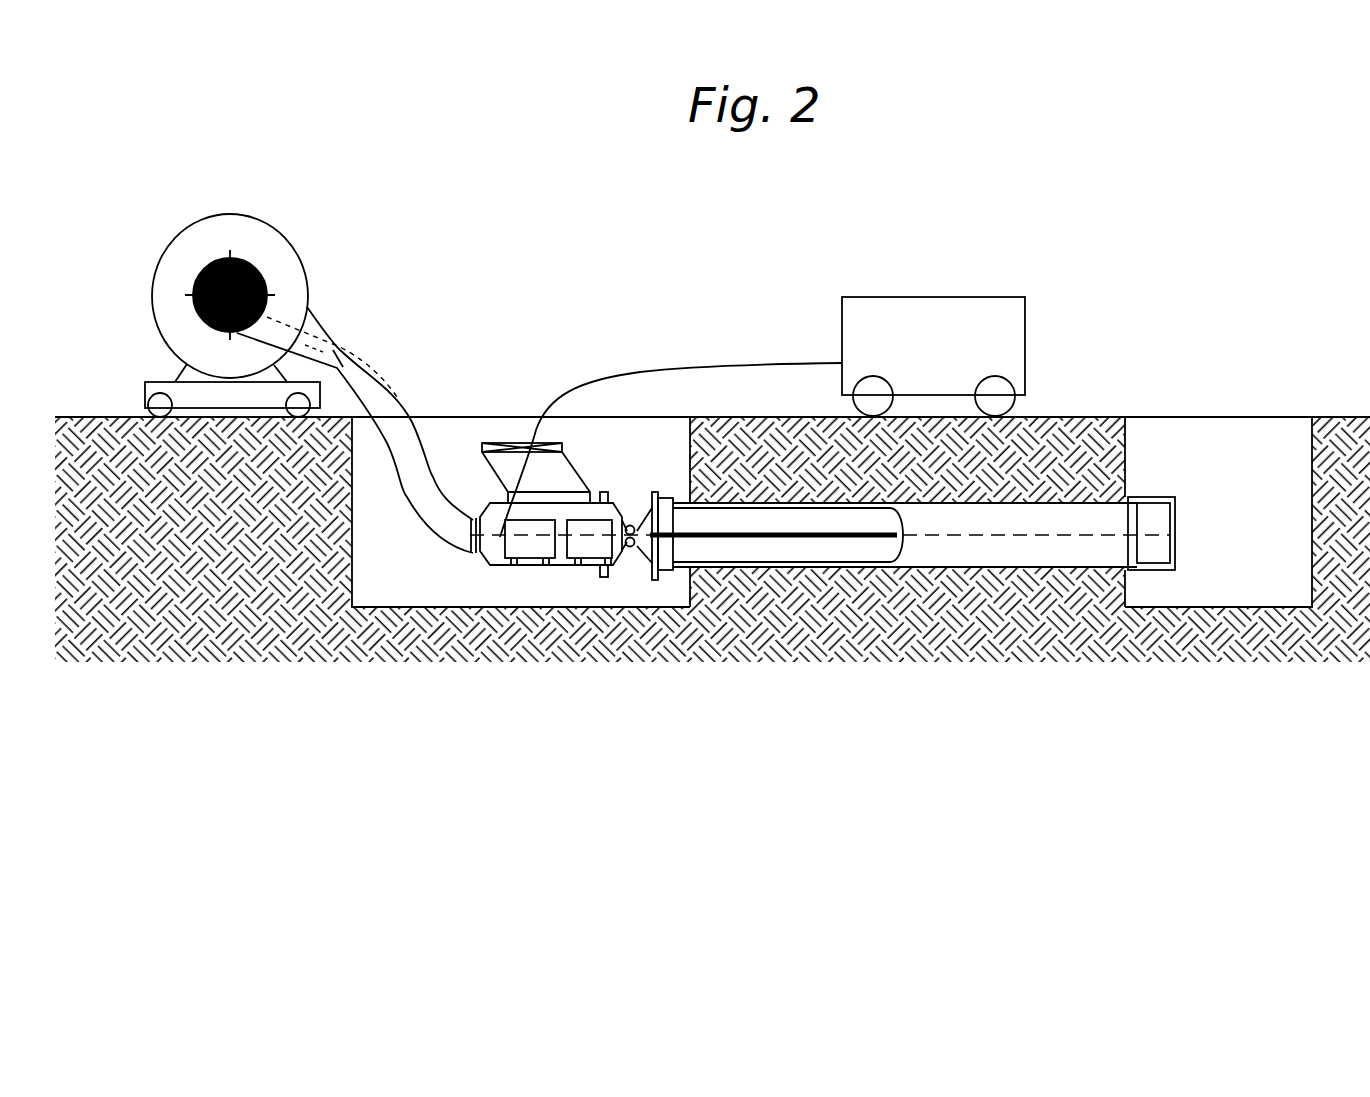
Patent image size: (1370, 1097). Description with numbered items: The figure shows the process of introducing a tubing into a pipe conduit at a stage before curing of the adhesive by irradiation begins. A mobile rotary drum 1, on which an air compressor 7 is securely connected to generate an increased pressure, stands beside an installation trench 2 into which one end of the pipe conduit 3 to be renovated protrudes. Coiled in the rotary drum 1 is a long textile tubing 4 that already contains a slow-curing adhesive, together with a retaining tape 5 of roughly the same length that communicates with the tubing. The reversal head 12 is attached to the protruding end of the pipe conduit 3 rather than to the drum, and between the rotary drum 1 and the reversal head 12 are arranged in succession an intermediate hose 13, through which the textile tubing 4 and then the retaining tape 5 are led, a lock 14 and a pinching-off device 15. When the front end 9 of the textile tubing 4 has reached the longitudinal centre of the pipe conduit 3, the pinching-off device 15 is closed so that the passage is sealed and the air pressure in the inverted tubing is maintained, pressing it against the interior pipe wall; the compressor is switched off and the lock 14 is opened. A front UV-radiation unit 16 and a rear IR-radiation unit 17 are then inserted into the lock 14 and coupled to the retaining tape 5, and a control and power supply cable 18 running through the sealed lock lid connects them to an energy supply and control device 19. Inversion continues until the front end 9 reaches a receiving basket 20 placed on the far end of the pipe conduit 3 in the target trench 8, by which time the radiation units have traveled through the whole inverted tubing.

The rotary drum 1 is at (307, 272).
The installation trench 2 is at (394, 592).
The pipe conduit 3 is at (1050, 565).
The textile tubing 4 is at (878, 548).
The retaining tape 5 is at (412, 422).
The air compressor 7 is at (145, 385).
The target trench 8 is at (1226, 571).
The front end 9 is at (897, 540).
The reversal head 12 is at (655, 563).
The intermediate hose 13 is at (423, 457).
The lock 14 is at (497, 558).
The pinching-off device 15 is at (628, 560).
The front UV-radiation unit 16 is at (590, 548).
The rear IR-radiation unit 17 is at (532, 550).
The control and power supply cable 18 is at (758, 363).
The energy supply and control device 19 is at (938, 297).
The receiving basket 20 is at (1148, 497).